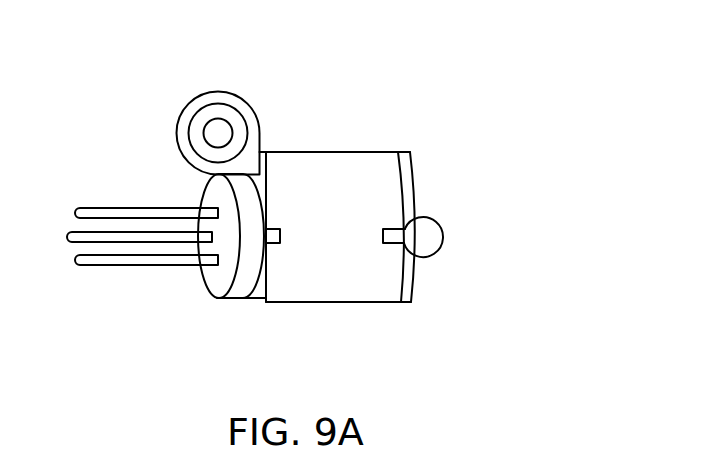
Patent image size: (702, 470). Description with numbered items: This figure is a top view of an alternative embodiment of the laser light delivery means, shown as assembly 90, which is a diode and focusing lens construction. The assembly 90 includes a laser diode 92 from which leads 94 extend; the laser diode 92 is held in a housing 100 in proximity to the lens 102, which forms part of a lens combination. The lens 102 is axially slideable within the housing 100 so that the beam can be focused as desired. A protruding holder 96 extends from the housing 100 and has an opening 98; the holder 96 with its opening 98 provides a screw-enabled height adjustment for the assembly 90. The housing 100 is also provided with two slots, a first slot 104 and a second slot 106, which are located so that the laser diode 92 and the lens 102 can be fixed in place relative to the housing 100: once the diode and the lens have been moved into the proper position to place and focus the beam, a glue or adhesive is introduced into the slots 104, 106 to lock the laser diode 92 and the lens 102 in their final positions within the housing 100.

The assembly 90 is at (428, 140).
The laser diode 92 is at (208, 283).
The leads 94 is at (133, 208).
The protruding holder 96 is at (177, 125).
The opening 98 is at (229, 125).
The housing 100 is at (342, 150).
The lens 102 is at (428, 233).
The slot 104 is at (280, 242).
The slot 106 is at (402, 300).